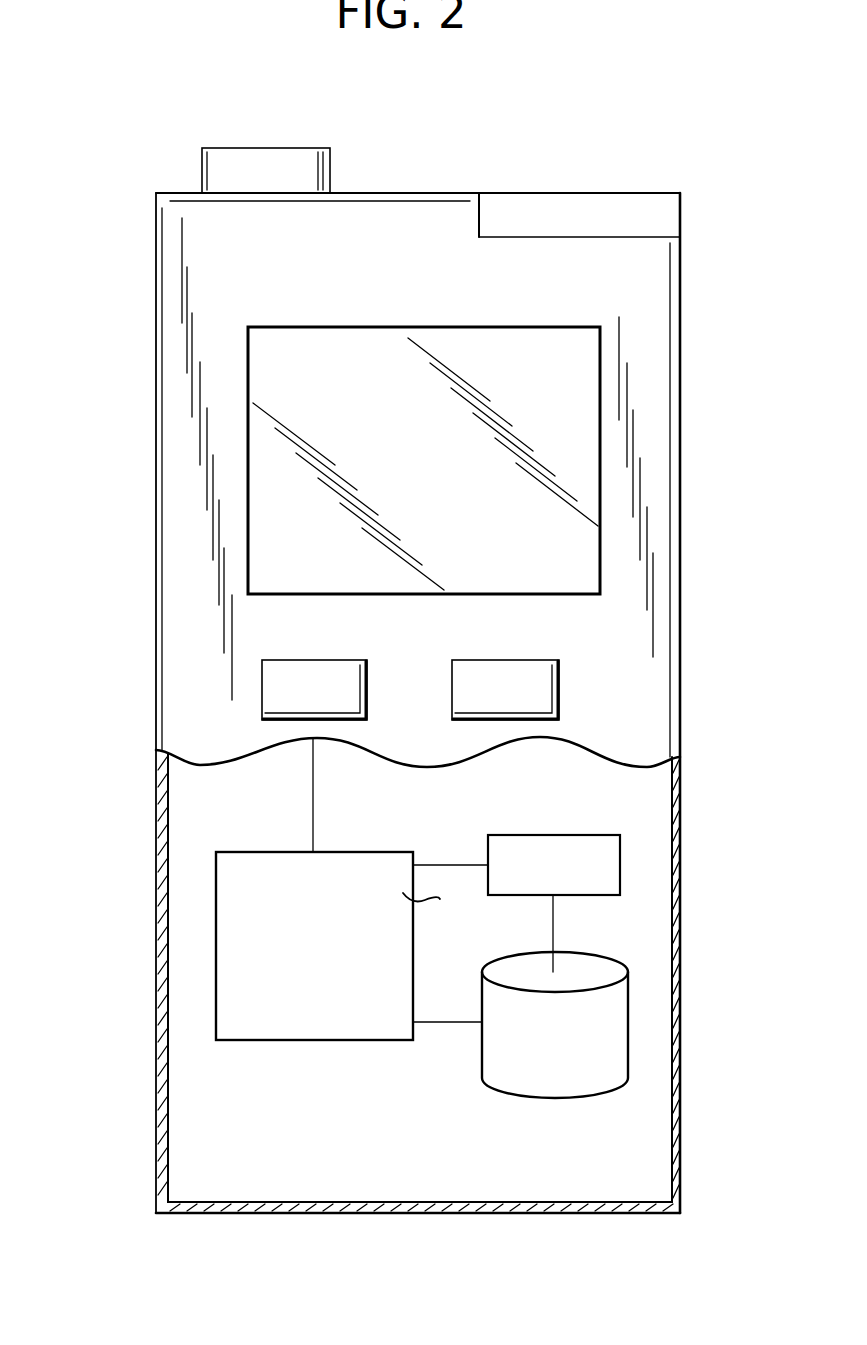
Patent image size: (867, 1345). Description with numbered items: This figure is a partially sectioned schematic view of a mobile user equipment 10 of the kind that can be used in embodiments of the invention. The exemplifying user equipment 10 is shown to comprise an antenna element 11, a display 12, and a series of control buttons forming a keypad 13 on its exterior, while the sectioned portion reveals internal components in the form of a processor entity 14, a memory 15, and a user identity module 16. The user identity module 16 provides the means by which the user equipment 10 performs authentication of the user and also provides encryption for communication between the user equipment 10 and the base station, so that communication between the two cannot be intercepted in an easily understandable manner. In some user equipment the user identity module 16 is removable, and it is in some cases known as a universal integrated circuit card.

The mobile user equipment 10 is at (156, 322).
The antenna element 11 is at (210, 166).
The display 12 is at (248, 507).
The keypad 13 is at (262, 698).
The processor entity 14 is at (217, 999).
The memory 15 is at (628, 1035).
The user identity module 16 is at (620, 867).